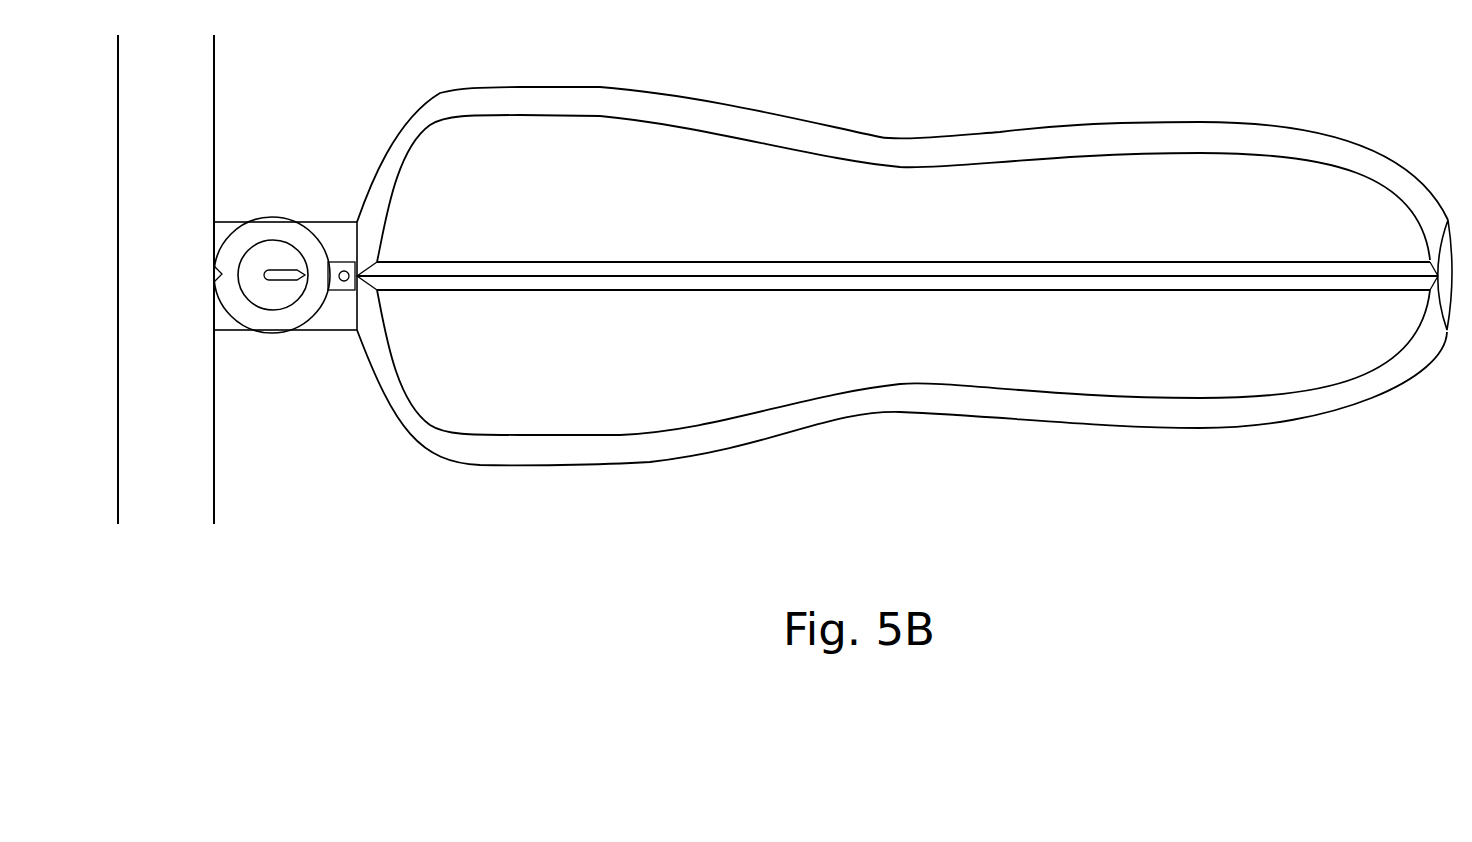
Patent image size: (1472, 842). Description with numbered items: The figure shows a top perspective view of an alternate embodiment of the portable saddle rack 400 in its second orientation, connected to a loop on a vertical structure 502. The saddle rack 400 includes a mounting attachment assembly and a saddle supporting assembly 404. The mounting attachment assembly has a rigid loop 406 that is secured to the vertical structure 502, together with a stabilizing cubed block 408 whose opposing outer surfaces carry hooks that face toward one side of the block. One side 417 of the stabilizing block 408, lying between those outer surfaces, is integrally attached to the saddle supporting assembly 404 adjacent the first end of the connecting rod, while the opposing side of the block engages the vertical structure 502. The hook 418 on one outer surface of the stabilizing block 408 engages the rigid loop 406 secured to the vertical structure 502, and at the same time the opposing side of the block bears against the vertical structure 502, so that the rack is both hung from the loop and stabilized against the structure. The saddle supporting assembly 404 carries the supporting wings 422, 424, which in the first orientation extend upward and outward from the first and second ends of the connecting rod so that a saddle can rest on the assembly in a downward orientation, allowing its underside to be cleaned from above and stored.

The saddle rack 400 is at (1203, 533).
The saddle supporting assembly 404 is at (908, 437).
The rigid loop 406 is at (214, 272).
The stabilizing cubed block 408 is at (338, 222).
The side of stabilizing block 417 is at (358, 233).
The hook 418 is at (292, 268).
The supporting wing 422 is at (688, 443).
The supporting wing 424 is at (733, 120).
The vertical structure 502 is at (194, 414).